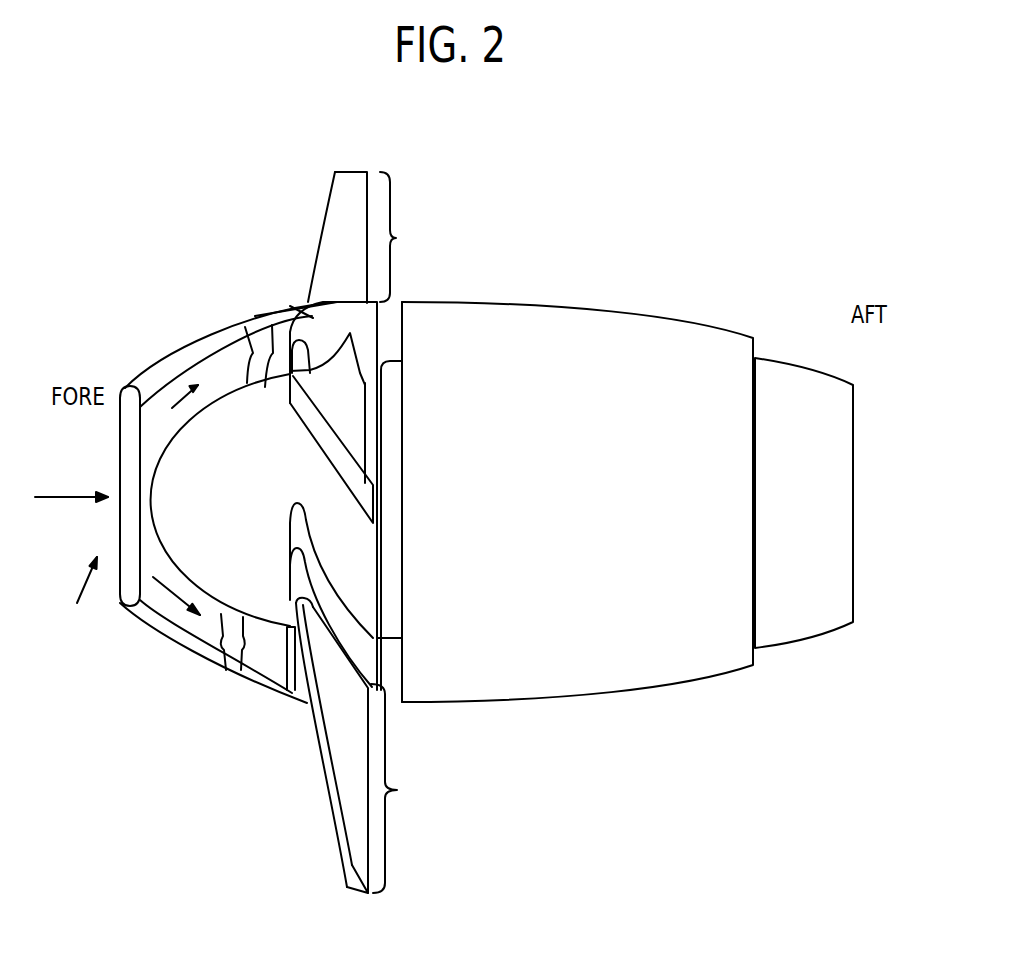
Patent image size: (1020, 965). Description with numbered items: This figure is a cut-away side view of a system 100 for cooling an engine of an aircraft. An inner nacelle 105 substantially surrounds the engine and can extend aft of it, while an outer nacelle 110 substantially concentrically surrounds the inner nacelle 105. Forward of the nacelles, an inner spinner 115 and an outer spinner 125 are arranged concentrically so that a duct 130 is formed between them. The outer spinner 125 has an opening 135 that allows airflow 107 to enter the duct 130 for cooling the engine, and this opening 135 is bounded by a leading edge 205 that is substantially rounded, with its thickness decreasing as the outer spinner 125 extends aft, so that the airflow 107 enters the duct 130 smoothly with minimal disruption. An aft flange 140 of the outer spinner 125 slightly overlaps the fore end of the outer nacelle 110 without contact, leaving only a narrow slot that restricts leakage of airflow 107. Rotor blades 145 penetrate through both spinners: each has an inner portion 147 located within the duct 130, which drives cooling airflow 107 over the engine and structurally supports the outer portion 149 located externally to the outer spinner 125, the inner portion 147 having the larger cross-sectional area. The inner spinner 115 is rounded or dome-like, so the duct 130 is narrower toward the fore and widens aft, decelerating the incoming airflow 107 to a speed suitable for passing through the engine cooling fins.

The system 100 is at (727, 762).
The inner nacelle 105 is at (397, 432).
The airflow 107 is at (63, 497).
The outer nacelle 110 is at (598, 680).
The inner spinner 115 is at (256, 452).
The outer spinner 125 is at (190, 342).
The duct 130 is at (262, 332).
The opening 135 is at (82, 588).
The aft flange 140 is at (403, 300).
The rotor blades 145 is at (333, 188).
The inner portion 147 is at (312, 316).
The outer portion 149 is at (396, 238).
The leading edge 205 is at (133, 388).